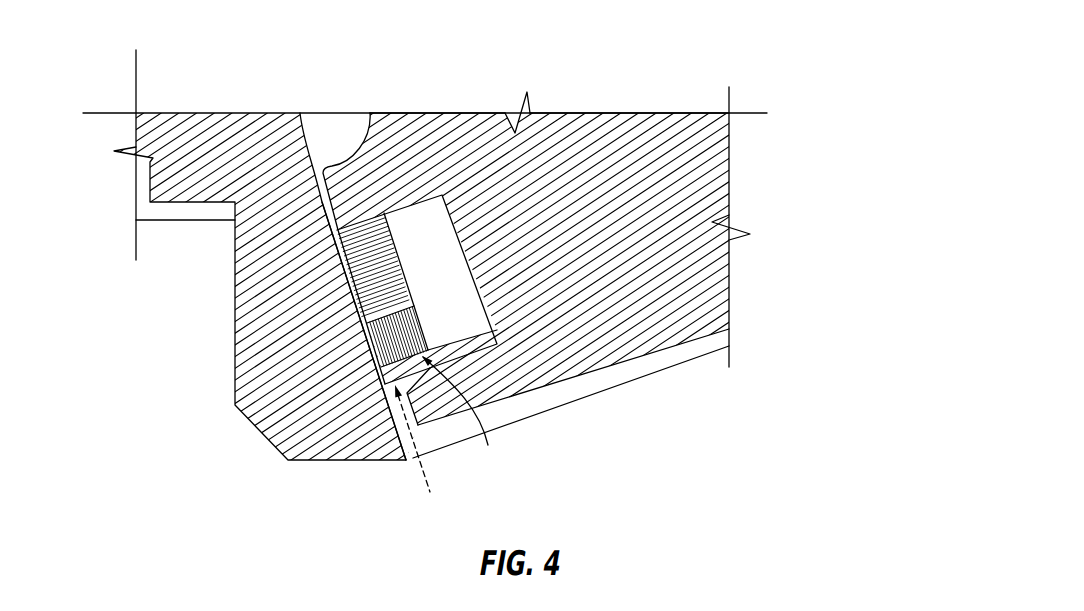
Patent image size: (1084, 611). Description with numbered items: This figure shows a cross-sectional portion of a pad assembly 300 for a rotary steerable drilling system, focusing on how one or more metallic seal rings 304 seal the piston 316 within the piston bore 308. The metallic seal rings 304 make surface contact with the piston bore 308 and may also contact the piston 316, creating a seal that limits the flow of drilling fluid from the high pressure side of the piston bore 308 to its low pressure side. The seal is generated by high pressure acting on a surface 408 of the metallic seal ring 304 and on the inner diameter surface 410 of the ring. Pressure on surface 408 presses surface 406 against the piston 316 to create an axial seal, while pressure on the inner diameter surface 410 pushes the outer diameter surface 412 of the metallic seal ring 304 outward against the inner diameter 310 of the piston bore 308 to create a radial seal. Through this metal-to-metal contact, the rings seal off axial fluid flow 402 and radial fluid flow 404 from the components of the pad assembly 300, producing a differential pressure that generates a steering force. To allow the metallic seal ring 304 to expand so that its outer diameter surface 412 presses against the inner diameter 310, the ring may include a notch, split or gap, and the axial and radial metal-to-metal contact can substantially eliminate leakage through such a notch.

The pad assembly 300 is at (755, 44).
The metallic seal rings 304 is at (367, 257).
The piston bore 308 is at (256, 334).
The inner diameter of the piston bore 310 is at (330, 180).
The piston 316 is at (403, 135).
The axial fluid flow 402 is at (428, 470).
The radial fluid flow 404 is at (477, 187).
The surface 406 is at (363, 223).
The surface of the metallic seal ring 408 is at (468, 418).
The inner diameter surface 410 is at (417, 293).
The outer diameter surface 412 is at (355, 322).